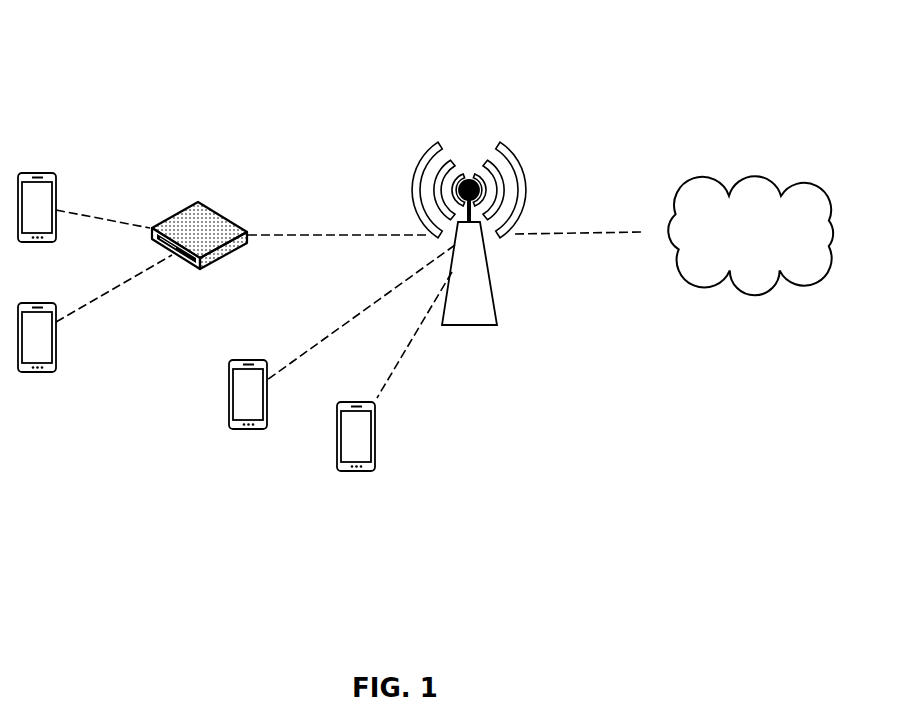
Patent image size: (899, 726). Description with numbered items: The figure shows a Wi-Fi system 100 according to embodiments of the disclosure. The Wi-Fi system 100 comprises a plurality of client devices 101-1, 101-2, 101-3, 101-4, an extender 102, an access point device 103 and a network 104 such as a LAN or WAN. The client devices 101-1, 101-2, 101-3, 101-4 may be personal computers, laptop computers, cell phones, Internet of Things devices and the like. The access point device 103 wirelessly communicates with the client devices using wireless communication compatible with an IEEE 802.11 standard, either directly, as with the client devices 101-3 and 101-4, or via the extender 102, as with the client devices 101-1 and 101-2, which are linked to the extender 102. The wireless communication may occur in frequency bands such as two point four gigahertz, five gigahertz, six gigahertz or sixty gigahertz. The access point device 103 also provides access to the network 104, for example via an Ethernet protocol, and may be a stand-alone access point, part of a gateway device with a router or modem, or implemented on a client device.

The Wi-Fi system 100 is at (388, 36).
The client device 101-1 is at (40, 173).
The client device 101-2 is at (40, 303).
The client device 101-3 is at (276, 348).
The client device 101-4 is at (375, 430).
The extender 102 is at (205, 193).
The access point device 103 is at (495, 312).
The network 104 is at (755, 160).